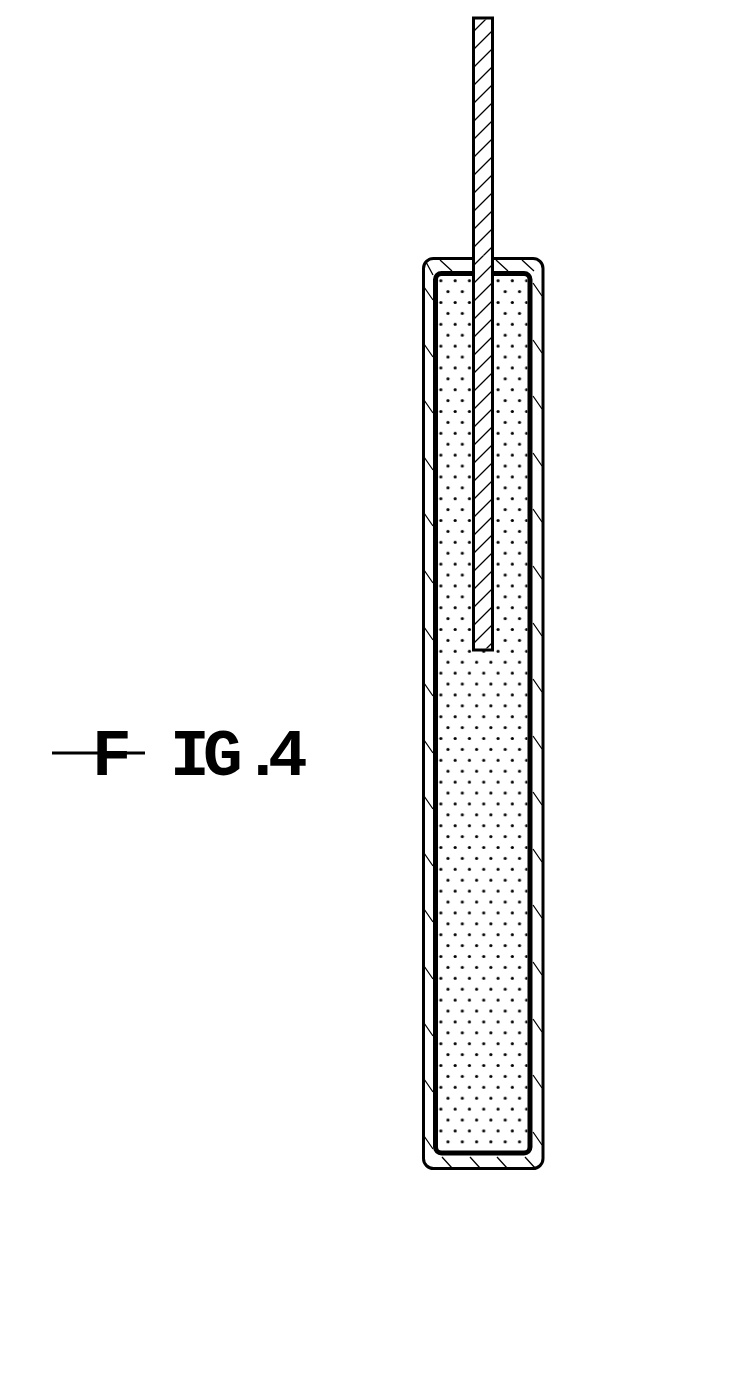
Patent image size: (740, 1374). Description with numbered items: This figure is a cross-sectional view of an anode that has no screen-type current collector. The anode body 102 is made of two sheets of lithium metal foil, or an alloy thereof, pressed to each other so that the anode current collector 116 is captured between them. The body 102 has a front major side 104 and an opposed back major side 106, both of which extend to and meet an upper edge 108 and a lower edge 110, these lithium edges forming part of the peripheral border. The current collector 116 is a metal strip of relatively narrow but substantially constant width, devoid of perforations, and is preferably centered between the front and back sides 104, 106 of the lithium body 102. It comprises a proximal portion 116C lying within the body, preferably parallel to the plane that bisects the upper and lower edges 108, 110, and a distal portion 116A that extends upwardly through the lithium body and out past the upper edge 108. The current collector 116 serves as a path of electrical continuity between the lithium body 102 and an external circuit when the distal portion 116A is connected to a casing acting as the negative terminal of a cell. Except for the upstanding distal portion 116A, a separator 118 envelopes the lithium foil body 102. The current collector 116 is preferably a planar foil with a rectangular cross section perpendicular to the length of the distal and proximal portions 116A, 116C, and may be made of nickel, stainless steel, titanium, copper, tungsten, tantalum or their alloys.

The anode body 102 is at (505, 788).
The front major side 104 is at (528, 694).
The back major side 106 is at (433, 538).
The upper edge 108 is at (507, 268).
The lower edge 110 is at (487, 1158).
The anode current collector 116 is at (485, 168).
The distal portion 116A is at (485, 80).
The proximal portion 116C is at (483, 592).
The separator 118 is at (543, 873).